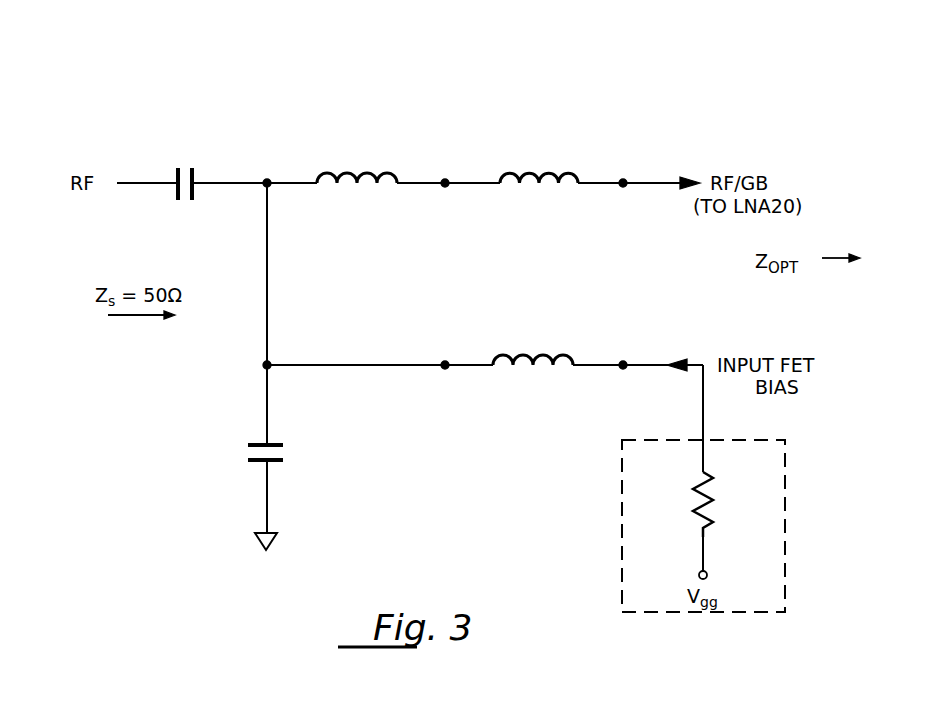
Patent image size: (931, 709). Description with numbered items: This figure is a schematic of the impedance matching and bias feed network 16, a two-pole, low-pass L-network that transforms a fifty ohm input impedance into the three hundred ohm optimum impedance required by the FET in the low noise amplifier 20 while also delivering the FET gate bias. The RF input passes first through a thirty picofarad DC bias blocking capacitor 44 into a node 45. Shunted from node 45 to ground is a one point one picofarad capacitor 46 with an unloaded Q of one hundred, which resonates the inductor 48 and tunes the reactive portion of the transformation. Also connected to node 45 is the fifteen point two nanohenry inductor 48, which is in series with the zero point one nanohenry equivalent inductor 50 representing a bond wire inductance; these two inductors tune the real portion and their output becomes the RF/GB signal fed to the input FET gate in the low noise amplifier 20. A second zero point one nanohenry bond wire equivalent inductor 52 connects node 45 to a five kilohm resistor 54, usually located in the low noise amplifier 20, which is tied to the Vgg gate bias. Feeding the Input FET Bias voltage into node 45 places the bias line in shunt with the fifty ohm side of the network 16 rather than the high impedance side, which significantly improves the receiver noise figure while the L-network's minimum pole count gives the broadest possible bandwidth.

The impedance matching and bias feed network 16 is at (264, 116).
The DC bias blocking capacitor 44 is at (183, 165).
The node 45 is at (268, 180).
The capacitor 46 is at (287, 449).
The inductor 48 is at (327, 170).
The equivalent inductor 50 is at (505, 170).
The equivalent inductor 52 is at (503, 350).
The resistor 54 is at (712, 485).
The low noise amplifier 20 is at (785, 503).